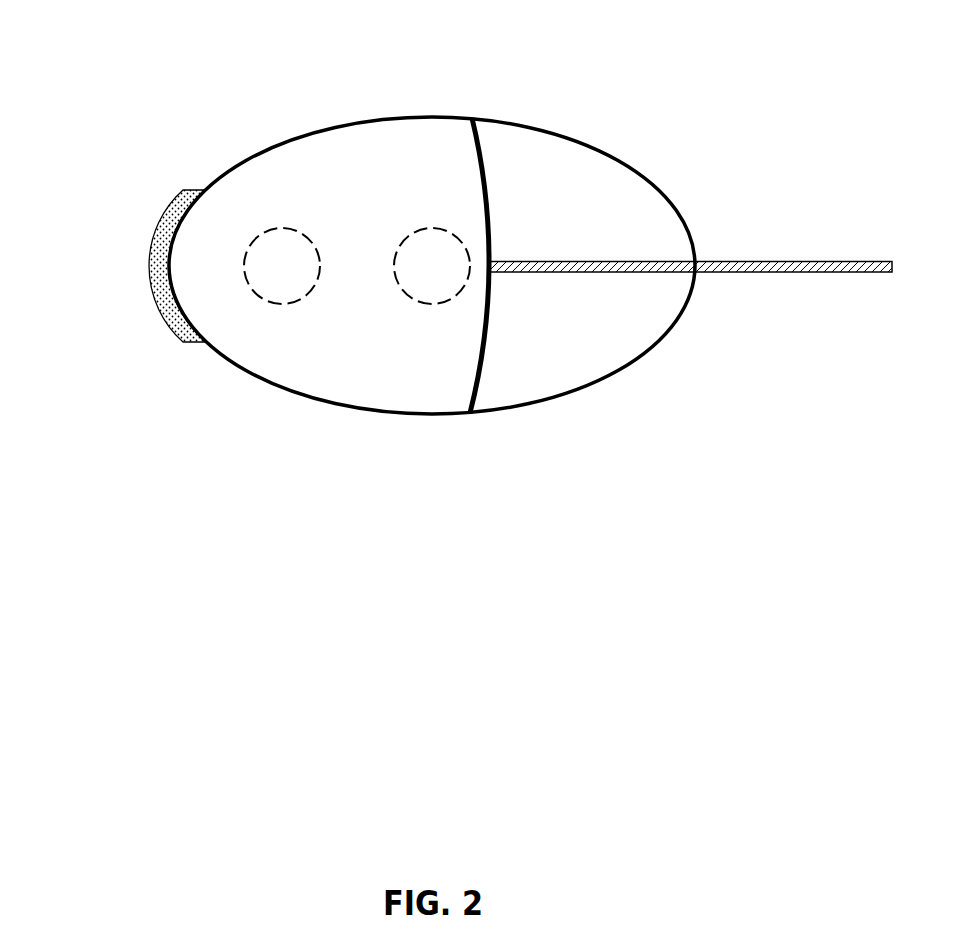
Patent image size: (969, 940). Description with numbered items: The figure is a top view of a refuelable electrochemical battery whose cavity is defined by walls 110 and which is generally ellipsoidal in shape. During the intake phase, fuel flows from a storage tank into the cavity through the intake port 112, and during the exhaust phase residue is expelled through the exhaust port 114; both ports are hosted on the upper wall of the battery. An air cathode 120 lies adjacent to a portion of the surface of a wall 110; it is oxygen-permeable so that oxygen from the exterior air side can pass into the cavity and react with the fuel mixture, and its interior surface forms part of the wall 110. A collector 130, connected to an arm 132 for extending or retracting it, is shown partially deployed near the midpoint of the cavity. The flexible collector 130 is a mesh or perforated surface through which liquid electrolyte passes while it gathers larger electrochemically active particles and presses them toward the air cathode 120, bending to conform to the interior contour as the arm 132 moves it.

The wall 110 is at (332, 126).
The intake port 112 is at (292, 228).
The exhaust port 114 is at (413, 231).
The air cathode 120 is at (114, 266).
The collector 130 is at (490, 325).
The arm 132 is at (694, 244).